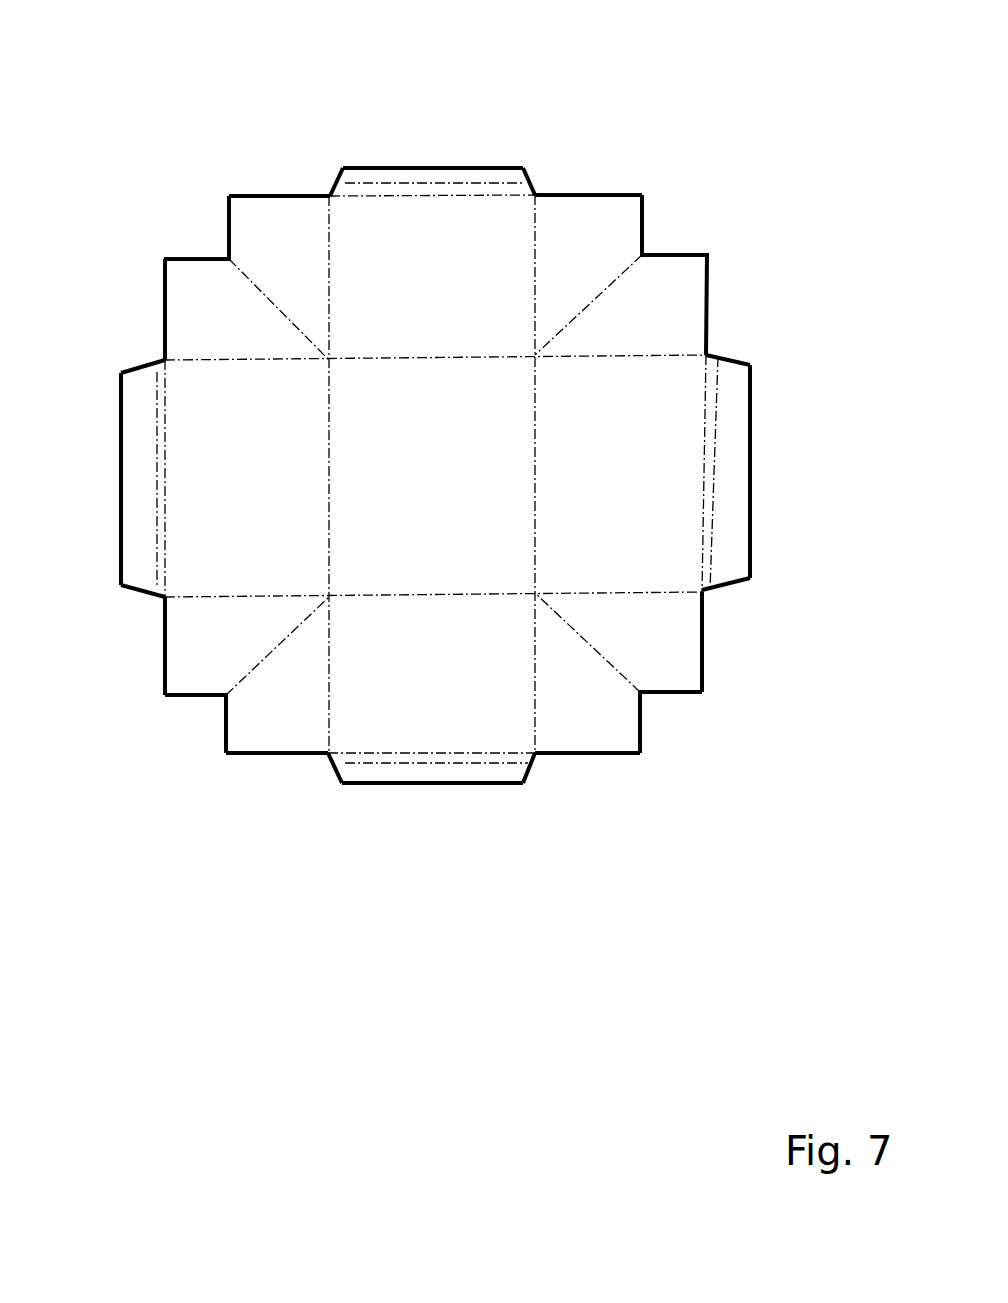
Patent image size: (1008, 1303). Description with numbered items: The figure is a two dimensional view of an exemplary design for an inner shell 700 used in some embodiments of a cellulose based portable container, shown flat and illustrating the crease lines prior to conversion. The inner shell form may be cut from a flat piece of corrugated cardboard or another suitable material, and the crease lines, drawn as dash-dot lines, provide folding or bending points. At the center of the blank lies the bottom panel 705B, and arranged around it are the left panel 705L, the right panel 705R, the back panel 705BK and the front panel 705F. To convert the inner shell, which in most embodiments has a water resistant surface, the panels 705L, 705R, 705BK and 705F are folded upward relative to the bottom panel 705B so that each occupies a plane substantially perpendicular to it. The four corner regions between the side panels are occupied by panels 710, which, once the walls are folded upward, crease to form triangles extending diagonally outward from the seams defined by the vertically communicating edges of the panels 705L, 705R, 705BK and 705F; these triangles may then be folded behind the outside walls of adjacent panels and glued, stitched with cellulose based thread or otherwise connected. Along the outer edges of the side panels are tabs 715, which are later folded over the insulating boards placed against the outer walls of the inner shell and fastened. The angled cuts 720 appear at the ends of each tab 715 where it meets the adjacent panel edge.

The inner shell 700 is at (431, 435).
The bottom panel 705B is at (435, 474).
The back panel 705BK is at (435, 243).
The left panel 705L is at (215, 477).
The right panel 705R is at (649, 473).
The front panel 705F is at (433, 705).
The panels 710 is at (263, 248).
The tabs 715 is at (433, 173).
The flap angled edges 720 is at (347, 190).